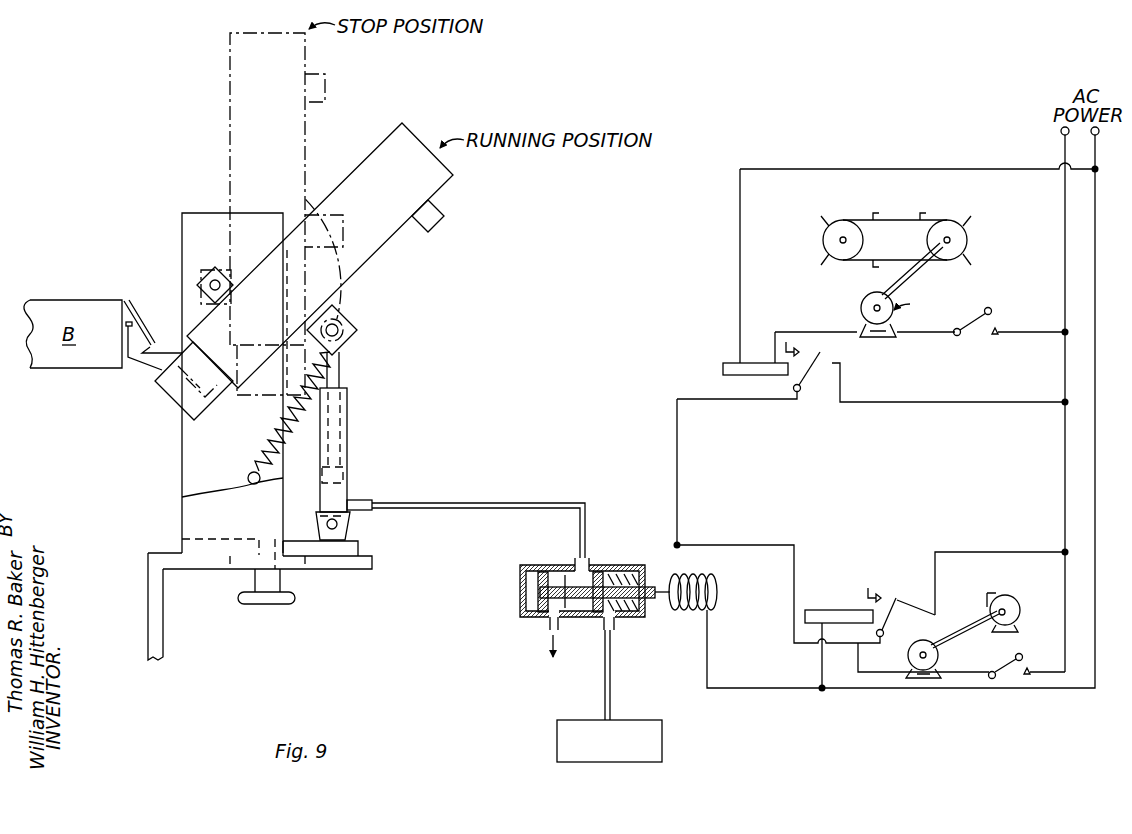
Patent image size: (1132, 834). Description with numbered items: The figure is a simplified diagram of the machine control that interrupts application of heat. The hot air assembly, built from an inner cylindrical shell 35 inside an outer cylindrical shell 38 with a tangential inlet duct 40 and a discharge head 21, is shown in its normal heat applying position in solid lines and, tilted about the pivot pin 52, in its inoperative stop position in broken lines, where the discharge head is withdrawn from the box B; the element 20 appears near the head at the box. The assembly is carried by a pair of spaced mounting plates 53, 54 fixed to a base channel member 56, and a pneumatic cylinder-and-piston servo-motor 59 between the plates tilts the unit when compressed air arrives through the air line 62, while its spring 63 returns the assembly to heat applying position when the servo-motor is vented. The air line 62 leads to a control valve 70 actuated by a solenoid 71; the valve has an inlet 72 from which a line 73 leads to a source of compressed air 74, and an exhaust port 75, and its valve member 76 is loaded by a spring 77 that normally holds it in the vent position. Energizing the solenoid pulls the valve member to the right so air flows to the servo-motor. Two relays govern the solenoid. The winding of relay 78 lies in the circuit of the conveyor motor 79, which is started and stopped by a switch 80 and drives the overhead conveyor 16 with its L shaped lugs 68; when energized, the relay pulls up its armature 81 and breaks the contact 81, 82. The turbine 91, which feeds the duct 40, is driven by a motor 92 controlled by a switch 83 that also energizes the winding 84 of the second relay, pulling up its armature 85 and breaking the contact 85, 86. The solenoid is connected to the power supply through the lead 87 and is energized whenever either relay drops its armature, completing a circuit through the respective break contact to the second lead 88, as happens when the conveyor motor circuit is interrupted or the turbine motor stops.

The overhead conveyor 16 is at (943, 218).
The stop lever 20 is at (138, 313).
The discharge head 21 is at (154, 360).
The inner cylindrical shell 35 is at (166, 390).
The outer cylindrical shell 38 is at (399, 187).
The inlet duct 40 is at (444, 216).
The pivot pin 52 is at (227, 280).
The mounting plate 53 is at (239, 519).
The mounting plate 54 is at (221, 451).
The base channel member 56 is at (158, 624).
The servo-motor 59 is at (349, 456).
The air line 62 is at (492, 502).
The spring 63 is at (270, 438).
The L shaped lugs 68 is at (830, 220).
The control valve 70 is at (601, 564).
The solenoid 71 is at (719, 582).
The inlet 72 is at (613, 623).
The line 73 is at (614, 682).
The source of compressed air 74 is at (665, 737).
The exhaust port 75 is at (545, 625).
The valve member 76 is at (566, 576).
The spring 77 is at (634, 568).
The relay winding 78 is at (722, 368).
The conveyor motor 79 is at (860, 312).
The switch 80 is at (977, 330).
The armature 81 is at (813, 378).
The contact 82 is at (823, 353).
The switch 83 is at (1022, 660).
The relay winding 84 is at (853, 612).
The armature 85 is at (897, 598).
The contact 86 is at (895, 615).
The lead 87 is at (1095, 424).
The second lead 88 is at (1064, 232).
The turbine 91 is at (1019, 601).
The motor 92 is at (935, 656).